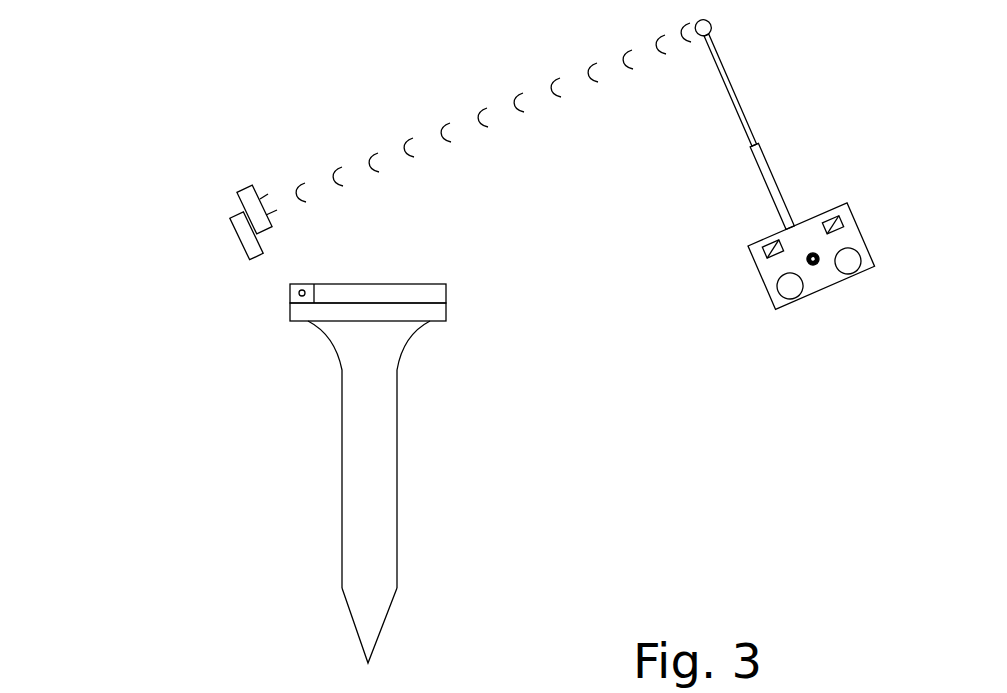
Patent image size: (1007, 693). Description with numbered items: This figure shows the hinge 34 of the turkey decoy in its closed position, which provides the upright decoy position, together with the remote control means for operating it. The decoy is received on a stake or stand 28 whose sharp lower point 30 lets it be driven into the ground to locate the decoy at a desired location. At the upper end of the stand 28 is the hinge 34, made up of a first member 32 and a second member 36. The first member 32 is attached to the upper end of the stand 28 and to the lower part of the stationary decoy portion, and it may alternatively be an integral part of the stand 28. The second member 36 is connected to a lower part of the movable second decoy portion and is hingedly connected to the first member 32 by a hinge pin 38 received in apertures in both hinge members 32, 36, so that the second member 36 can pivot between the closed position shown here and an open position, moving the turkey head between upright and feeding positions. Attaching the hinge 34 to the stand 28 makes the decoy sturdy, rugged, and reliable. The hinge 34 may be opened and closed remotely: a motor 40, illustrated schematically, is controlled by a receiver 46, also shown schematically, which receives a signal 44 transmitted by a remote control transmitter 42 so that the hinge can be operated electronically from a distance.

The stake or stand 28 is at (397, 485).
The sharp lower point 30 is at (368, 663).
The first member 32 is at (447, 311).
The hinge 34 is at (287, 335).
The second member 36 is at (447, 290).
The hinge pin 38 is at (298, 293).
The motor 40 is at (243, 243).
The remote control transmitter 42 is at (773, 200).
The signal 44 is at (478, 125).
The receiver 46 is at (243, 193).